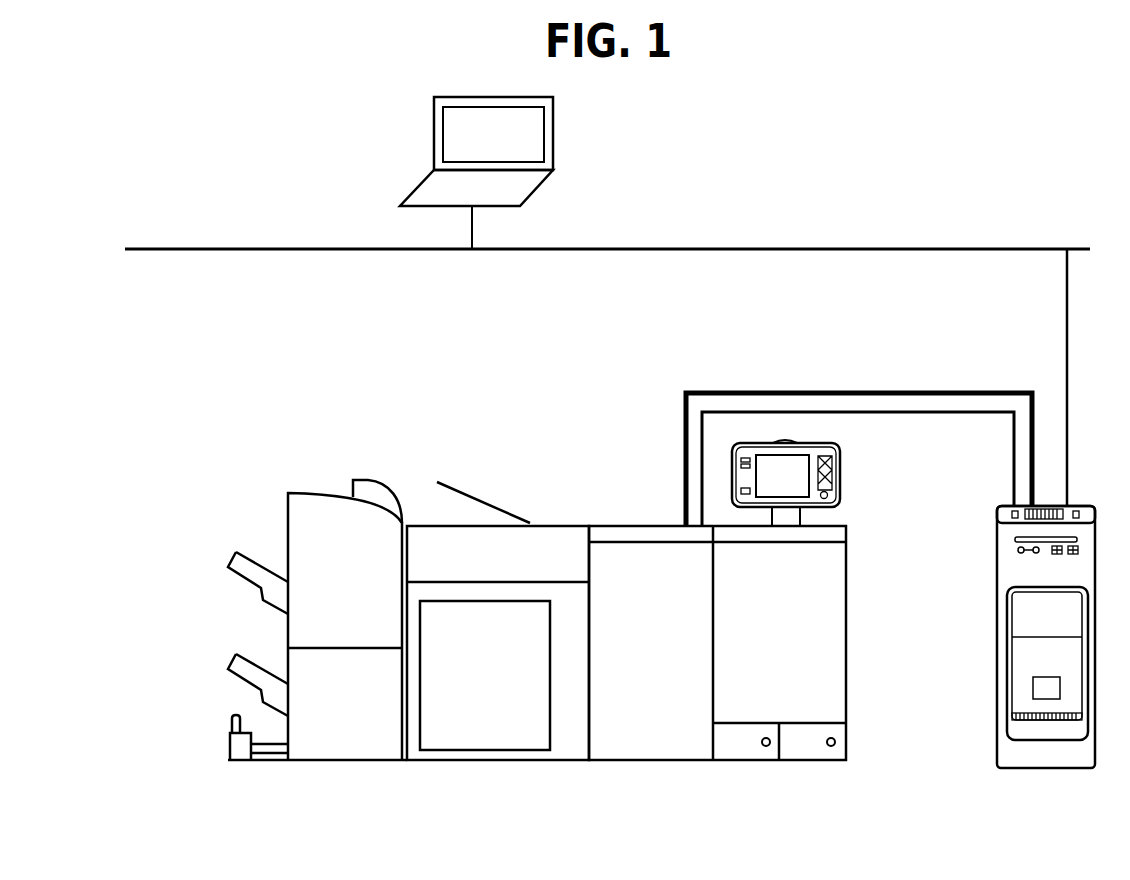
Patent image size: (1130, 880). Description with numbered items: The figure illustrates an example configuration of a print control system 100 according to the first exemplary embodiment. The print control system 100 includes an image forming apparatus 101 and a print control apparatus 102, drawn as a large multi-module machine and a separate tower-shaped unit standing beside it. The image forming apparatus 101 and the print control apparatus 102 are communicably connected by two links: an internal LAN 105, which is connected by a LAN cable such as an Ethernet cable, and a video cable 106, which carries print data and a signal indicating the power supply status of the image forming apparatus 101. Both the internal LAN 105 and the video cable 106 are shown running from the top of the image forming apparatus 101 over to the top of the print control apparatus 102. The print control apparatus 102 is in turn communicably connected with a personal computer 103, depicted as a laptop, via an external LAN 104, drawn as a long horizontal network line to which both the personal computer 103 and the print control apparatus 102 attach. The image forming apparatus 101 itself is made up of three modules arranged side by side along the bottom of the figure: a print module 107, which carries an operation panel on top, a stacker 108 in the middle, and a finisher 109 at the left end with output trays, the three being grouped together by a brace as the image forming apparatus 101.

The print control system 100 is at (214, 875).
The image forming apparatus 101 is at (875, 818).
The print control apparatus 102 is at (1047, 771).
The personal computer (PC) 103 is at (434, 142).
The external LAN 104 is at (963, 247).
The internal LAN 105 is at (933, 413).
The video cable 106 is at (905, 390).
The print module 107 is at (795, 763).
The stacker 108 is at (478, 763).
The finisher 109 is at (362, 763).